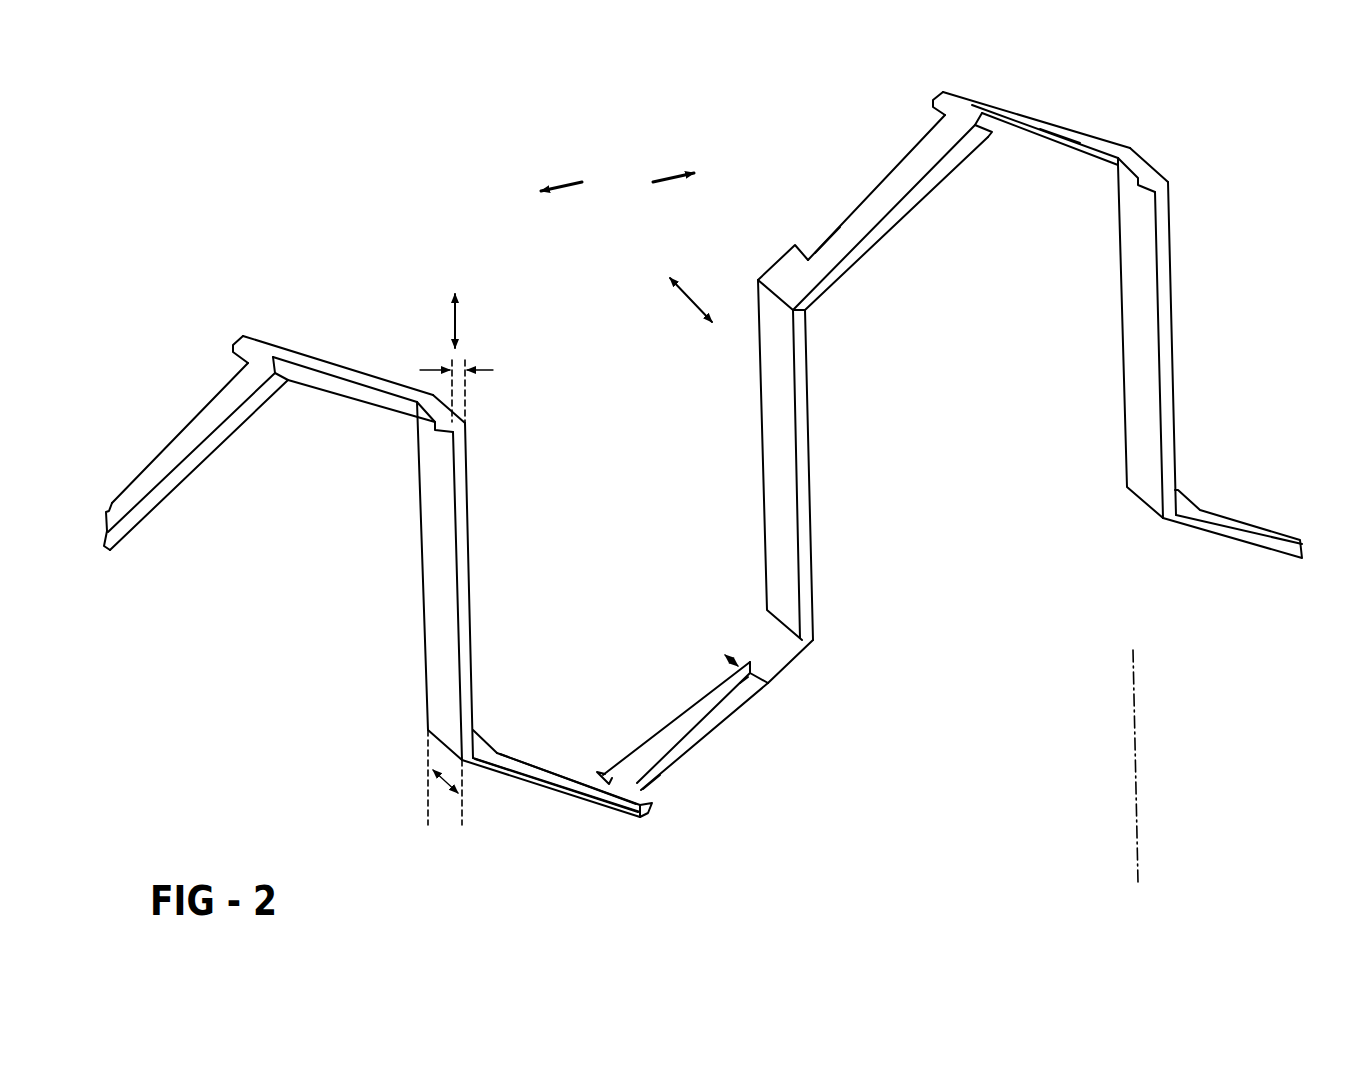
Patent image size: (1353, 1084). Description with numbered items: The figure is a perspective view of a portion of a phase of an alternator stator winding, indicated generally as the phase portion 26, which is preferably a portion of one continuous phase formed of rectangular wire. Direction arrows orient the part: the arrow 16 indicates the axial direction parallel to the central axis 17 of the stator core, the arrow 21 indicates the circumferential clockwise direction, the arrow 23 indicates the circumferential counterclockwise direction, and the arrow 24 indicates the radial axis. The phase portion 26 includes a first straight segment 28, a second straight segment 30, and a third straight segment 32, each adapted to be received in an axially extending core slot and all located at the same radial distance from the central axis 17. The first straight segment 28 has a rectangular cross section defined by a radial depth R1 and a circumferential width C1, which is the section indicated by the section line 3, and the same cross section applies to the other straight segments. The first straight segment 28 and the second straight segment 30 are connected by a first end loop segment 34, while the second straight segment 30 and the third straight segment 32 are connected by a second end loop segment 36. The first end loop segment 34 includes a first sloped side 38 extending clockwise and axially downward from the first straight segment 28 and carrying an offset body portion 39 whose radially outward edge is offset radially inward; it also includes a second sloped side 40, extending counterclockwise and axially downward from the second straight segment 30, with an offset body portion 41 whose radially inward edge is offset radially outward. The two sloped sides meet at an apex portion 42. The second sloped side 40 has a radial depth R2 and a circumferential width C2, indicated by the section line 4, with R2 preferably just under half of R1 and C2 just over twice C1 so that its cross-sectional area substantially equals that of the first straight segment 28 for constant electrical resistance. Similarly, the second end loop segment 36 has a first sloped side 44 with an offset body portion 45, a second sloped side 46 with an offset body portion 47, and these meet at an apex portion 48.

The section line 3- 3 is at (425, 522).
The section line 4- 4 is at (664, 699).
The arrow indicating axial direction 16 is at (455, 325).
The central axis 17 is at (1135, 758).
The arrow indicating circumferential clockwise direction 21 is at (676, 176).
The arrow indicating circumferential counterclockwise direction 23 is at (563, 190).
The arrow indicating radial axis 24 is at (690, 300).
The phase portion 26 is at (233, 337).
The first straight segment 28 is at (437, 667).
The second straight segment 30 is at (780, 452).
The third straight segment 32 is at (1137, 415).
The first end loop segment 34 is at (577, 802).
The second end loop segment 36 is at (931, 129).
The first sloped side 38 is at (515, 766).
The offset body portion 39 is at (539, 758).
The second sloped side 40 is at (708, 695).
The offset body portion 41 is at (655, 777).
The apex portion 42 is at (637, 818).
The first sloped side 44 is at (893, 193).
The offset body portion 45 is at (837, 232).
The second sloped side 46 is at (1108, 143).
The offset body portion 47 is at (1058, 150).
The apex portion 48 is at (970, 105).
The circumferential width C1 is at (491, 367).
The circumferential width C2 is at (735, 685).
The radial depth R1 is at (447, 793).
The radial depth R2 is at (735, 655).